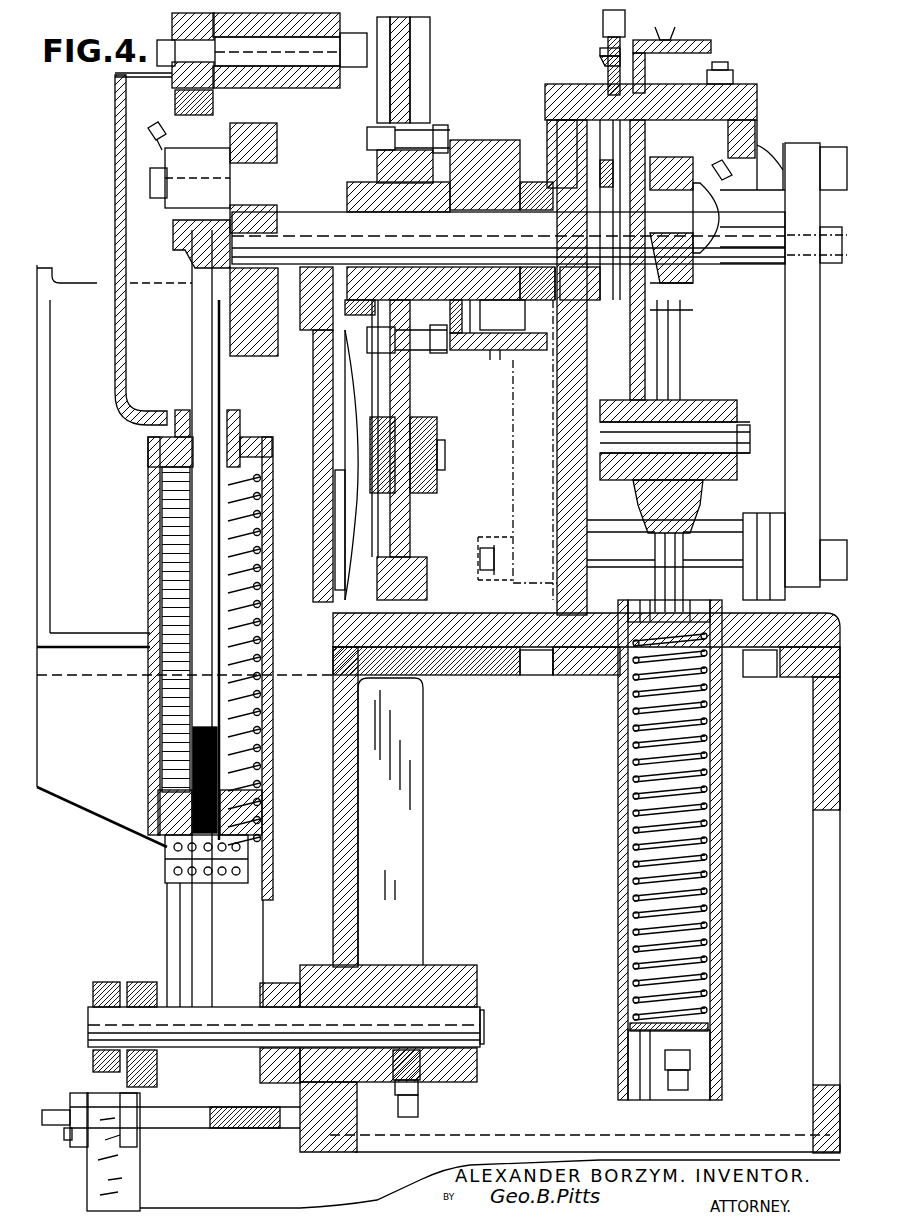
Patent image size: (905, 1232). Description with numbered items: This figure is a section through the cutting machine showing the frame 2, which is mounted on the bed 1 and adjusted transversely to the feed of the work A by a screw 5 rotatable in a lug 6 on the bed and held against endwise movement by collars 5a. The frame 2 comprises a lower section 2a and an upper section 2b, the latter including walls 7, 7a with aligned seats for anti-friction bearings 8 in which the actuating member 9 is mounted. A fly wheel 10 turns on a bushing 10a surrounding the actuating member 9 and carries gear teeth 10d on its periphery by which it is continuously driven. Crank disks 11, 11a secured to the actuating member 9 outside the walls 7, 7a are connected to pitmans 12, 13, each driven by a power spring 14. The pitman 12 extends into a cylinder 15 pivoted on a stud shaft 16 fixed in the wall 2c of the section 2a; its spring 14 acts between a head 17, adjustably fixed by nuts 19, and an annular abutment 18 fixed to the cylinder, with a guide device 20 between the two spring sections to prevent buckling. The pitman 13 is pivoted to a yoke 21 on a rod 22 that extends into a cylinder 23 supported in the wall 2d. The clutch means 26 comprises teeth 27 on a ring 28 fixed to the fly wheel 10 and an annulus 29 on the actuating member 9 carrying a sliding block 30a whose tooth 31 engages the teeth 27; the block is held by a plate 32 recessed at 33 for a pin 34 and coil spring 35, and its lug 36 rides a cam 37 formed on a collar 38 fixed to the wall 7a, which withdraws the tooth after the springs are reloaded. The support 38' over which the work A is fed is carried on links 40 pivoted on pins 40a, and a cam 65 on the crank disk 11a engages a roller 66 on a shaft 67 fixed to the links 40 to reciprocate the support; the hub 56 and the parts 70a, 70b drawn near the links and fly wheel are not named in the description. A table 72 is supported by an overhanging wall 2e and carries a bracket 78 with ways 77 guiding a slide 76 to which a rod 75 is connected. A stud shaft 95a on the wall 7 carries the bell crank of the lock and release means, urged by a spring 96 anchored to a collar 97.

The bed 1 is at (463, 1152).
The frame 2 is at (570, 882).
The lower section 2a is at (810, 915).
The upper section 2b is at (462, 600).
The wall 2c is at (423, 918).
The wall 2d is at (556, 650).
The overhanging wall 2e is at (757, 127).
The screw 5 is at (202, 1130).
The collars 5a is at (78, 1140).
The lug 6 is at (97, 1093).
The wall 7 is at (318, 595).
The wall 7a is at (557, 497).
The anti-friction bearings 8 is at (610, 210).
The actuating member 9 is at (247, 237).
The fly wheel 10 is at (410, 527).
The bushing 10a is at (395, 403).
The gear teeth 10d is at (430, 600).
The crank disk 11 is at (232, 340).
The crank disk 11a is at (660, 312).
The pitman 12 is at (200, 313).
The pitman 13 is at (680, 360).
The power springs 14 is at (148, 735).
The cylinder 15 is at (148, 697).
The stud shaft 16 is at (484, 1015).
The head 17 is at (152, 822).
The annular abutment 18 is at (148, 452).
The nuts 19 is at (165, 845).
The guide device 20 is at (148, 637).
The yoke 21 is at (690, 402).
The rod 22 is at (655, 577).
The cylinder 23 is at (712, 897).
The clutch means 26 is at (485, 164).
The teeth 27 is at (400, 170).
The ring 28 is at (433, 125).
The annulus 29 is at (454, 136).
The block 30a is at (455, 353).
The tooth 31 is at (453, 267).
The plate 32 is at (498, 348).
The recess 33 is at (470, 352).
The pin 34 is at (490, 352).
The coil spring 35 is at (500, 352).
The lug 36 is at (577, 267).
The cam 37 is at (555, 267).
The collar 38 is at (537, 257).
The support 38' is at (785, 155).
The links 40 is at (790, 383).
The pins 40a is at (494, 549).
The hub 56 is at (712, 480).
The cam 65 is at (645, 135).
The roller 66 is at (660, 296).
The shaft 67 is at (757, 258).
The collar 70a is at (448, 422).
The link 70b is at (92, 283).
The table 72 is at (683, 66).
The rod 75 is at (603, 22).
The slide 76 is at (625, 30).
The ways 77 is at (600, 51).
The bracket 78 is at (602, 62).
The stud shaft 95a is at (235, 125).
The spring 96 is at (200, 112).
The collar 97 is at (187, 92).
The work A is at (677, 33).